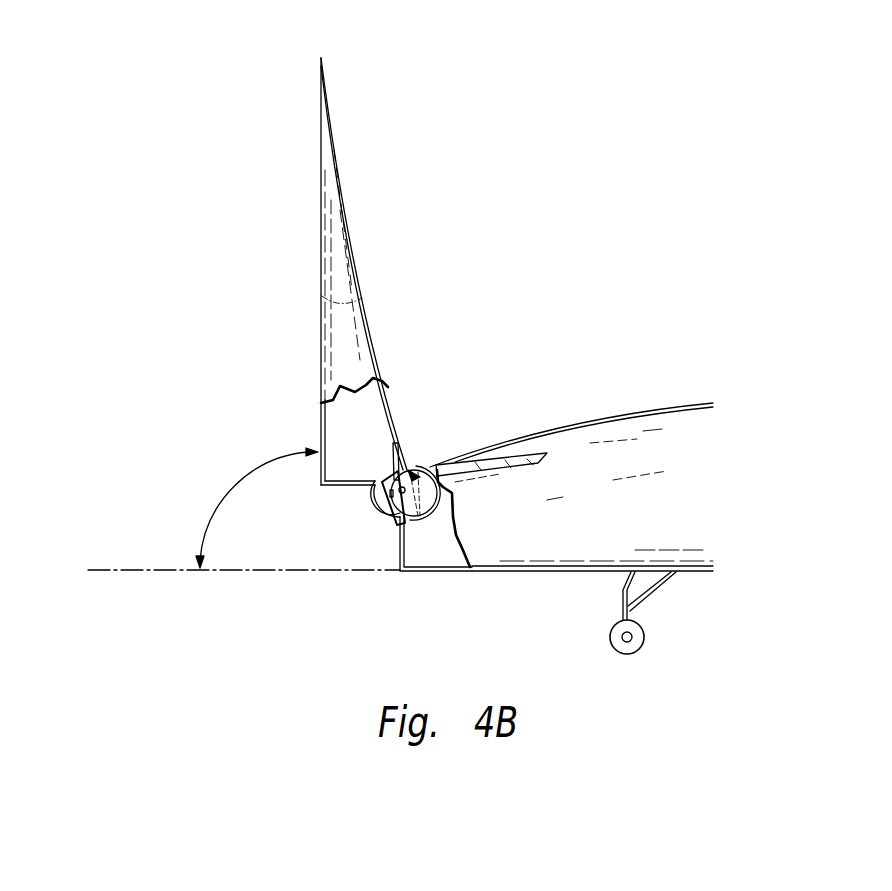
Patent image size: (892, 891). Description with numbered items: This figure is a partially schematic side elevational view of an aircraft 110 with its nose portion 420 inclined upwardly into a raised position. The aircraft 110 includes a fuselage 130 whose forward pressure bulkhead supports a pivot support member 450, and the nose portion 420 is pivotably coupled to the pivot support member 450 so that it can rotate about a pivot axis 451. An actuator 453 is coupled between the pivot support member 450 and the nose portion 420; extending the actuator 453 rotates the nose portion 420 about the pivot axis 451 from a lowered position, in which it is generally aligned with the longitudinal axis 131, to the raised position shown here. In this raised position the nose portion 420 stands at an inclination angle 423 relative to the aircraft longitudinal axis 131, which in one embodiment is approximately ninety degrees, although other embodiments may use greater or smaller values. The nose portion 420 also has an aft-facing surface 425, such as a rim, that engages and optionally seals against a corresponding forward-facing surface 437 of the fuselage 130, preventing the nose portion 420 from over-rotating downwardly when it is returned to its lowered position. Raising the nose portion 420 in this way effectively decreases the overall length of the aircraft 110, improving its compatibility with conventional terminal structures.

The aircraft 110 is at (590, 371).
The fuselage 130 is at (645, 410).
The longitudinal axis 131 is at (138, 570).
The nose portion 420 is at (343, 221).
The inclination angle 423 is at (232, 487).
The aft-facing surface 425 is at (345, 488).
The forward-facing surface 437 is at (399, 545).
The pivot support member 450 is at (428, 518).
The pivot axis 451 is at (414, 471).
The actuator 453 is at (393, 458).